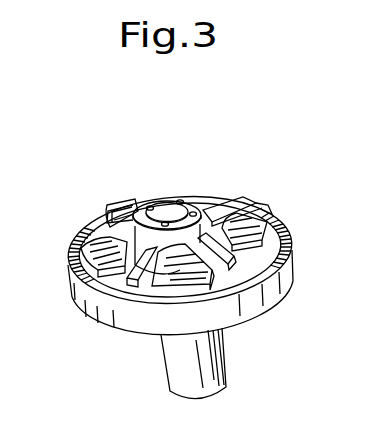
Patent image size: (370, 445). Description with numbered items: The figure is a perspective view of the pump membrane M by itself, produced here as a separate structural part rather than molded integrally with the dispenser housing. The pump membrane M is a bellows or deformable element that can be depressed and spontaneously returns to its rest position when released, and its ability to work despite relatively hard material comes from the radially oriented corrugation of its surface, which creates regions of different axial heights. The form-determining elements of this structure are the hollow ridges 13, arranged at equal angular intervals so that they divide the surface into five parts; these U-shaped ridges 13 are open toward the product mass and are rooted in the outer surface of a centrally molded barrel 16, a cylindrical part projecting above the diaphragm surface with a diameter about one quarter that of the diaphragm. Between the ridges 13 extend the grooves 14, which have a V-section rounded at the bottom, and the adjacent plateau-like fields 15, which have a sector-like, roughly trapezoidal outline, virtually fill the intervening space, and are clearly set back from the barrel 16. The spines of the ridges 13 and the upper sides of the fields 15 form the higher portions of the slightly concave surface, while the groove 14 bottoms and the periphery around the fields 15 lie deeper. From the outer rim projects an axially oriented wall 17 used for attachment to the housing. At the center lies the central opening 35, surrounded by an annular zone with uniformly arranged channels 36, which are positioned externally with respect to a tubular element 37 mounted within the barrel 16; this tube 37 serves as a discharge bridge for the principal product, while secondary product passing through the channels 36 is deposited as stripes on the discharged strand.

The hollow ridges 13 is at (102, 230).
The grooves 14 is at (152, 278).
The fields 15 is at (82, 250).
The barrel 16 is at (217, 207).
The axially oriented wall 17 is at (267, 287).
The central opening 35 is at (160, 199).
The channels 36 is at (193, 201).
The tubular element 37 is at (217, 367).
The pump membrane M is at (285, 243).